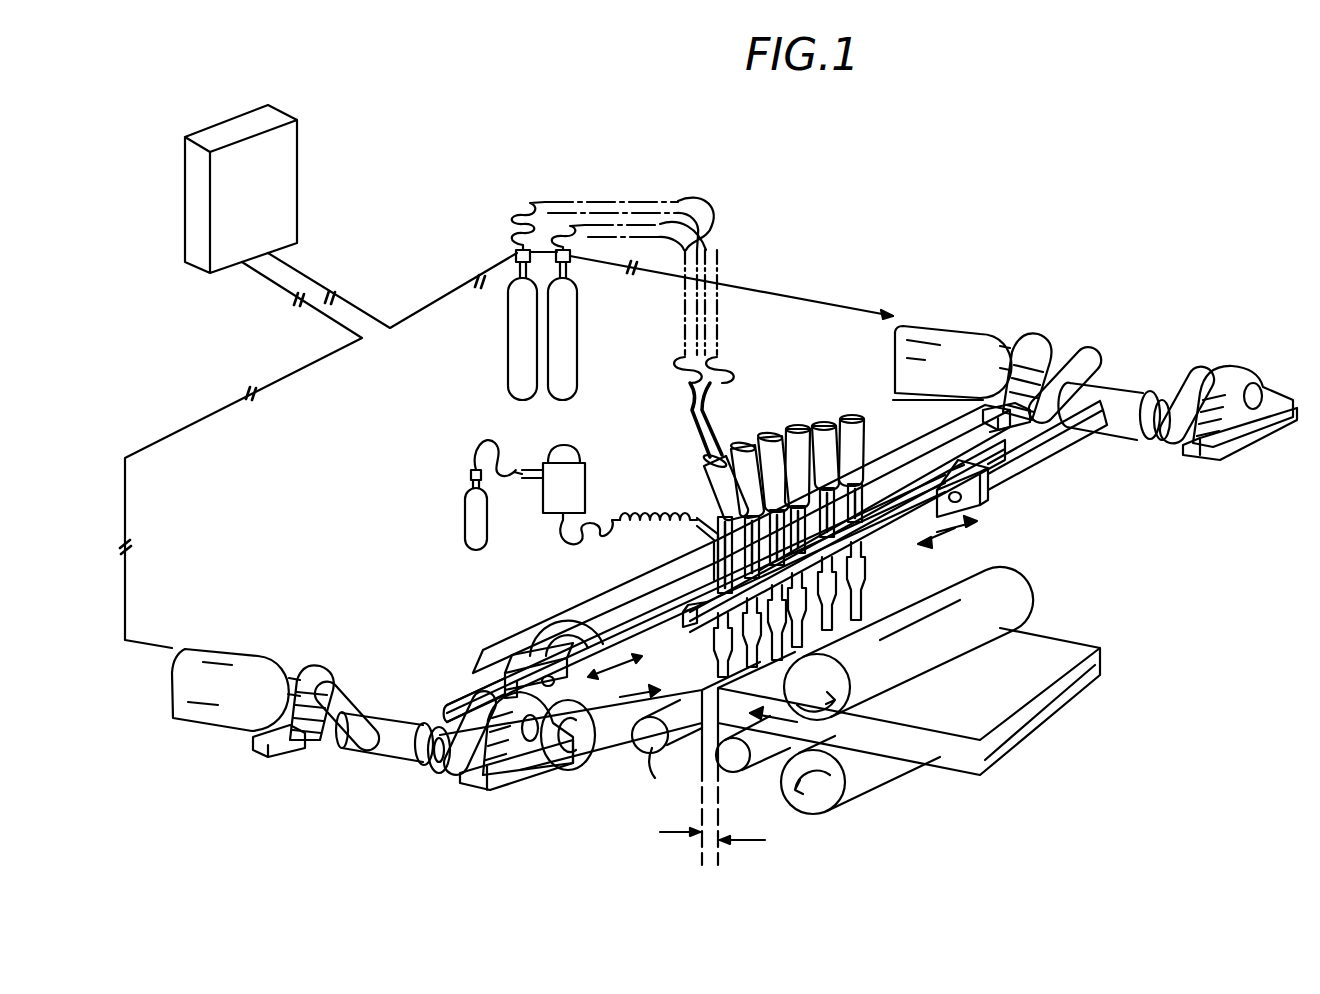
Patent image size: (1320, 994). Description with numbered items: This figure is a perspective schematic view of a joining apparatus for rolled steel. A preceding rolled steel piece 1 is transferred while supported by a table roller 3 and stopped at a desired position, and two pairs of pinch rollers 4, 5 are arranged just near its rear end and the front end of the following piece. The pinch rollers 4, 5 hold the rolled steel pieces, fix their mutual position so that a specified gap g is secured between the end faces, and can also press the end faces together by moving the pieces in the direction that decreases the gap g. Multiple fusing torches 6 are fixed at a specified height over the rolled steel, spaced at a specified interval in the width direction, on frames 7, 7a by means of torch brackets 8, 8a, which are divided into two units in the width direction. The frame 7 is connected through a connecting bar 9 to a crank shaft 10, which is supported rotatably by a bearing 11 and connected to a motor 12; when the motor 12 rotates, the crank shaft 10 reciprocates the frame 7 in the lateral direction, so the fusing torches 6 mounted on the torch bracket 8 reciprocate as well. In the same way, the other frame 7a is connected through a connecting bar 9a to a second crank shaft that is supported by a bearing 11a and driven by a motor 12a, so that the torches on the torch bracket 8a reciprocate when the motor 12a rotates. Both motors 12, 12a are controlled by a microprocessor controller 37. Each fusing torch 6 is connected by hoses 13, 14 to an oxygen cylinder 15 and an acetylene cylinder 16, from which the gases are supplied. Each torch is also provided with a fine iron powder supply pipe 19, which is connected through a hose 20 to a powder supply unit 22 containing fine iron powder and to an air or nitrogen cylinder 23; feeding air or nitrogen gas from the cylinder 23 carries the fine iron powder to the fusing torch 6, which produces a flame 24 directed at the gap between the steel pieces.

The preceding rolled steel piece 1 is at (1052, 663).
The table roller 3 is at (718, 752).
The pinch rollers 4 is at (549, 635).
The pinch rollers 5 is at (838, 665).
The fusing torches 6 is at (714, 636).
The frame 7 is at (882, 500).
The frame 7a is at (610, 636).
The torch bracket 8 is at (876, 540).
The torch bracket 8a is at (695, 595).
The connecting bar 9 is at (1050, 448).
The connecting bar 9a is at (456, 698).
The crank shaft 10 is at (1192, 380).
The bearing 11 is at (1035, 345).
The bearing 11a is at (307, 670).
The motor 12 is at (953, 335).
The motor 12a is at (204, 658).
The hose 13 is at (720, 364).
The hose 14 is at (687, 368).
The oxygen cylinder 15 is at (508, 376).
The acetylene cylinder 16 is at (578, 366).
The fine iron powder supply pipe 19 is at (707, 515).
The hose 20 is at (650, 514).
The powder supply unit 22 is at (578, 456).
The air or nitrogen cylinder 23 is at (466, 540).
The flame 24 is at (718, 662).
The microprocessor controller 37 is at (228, 125).
The gap g is at (714, 797).